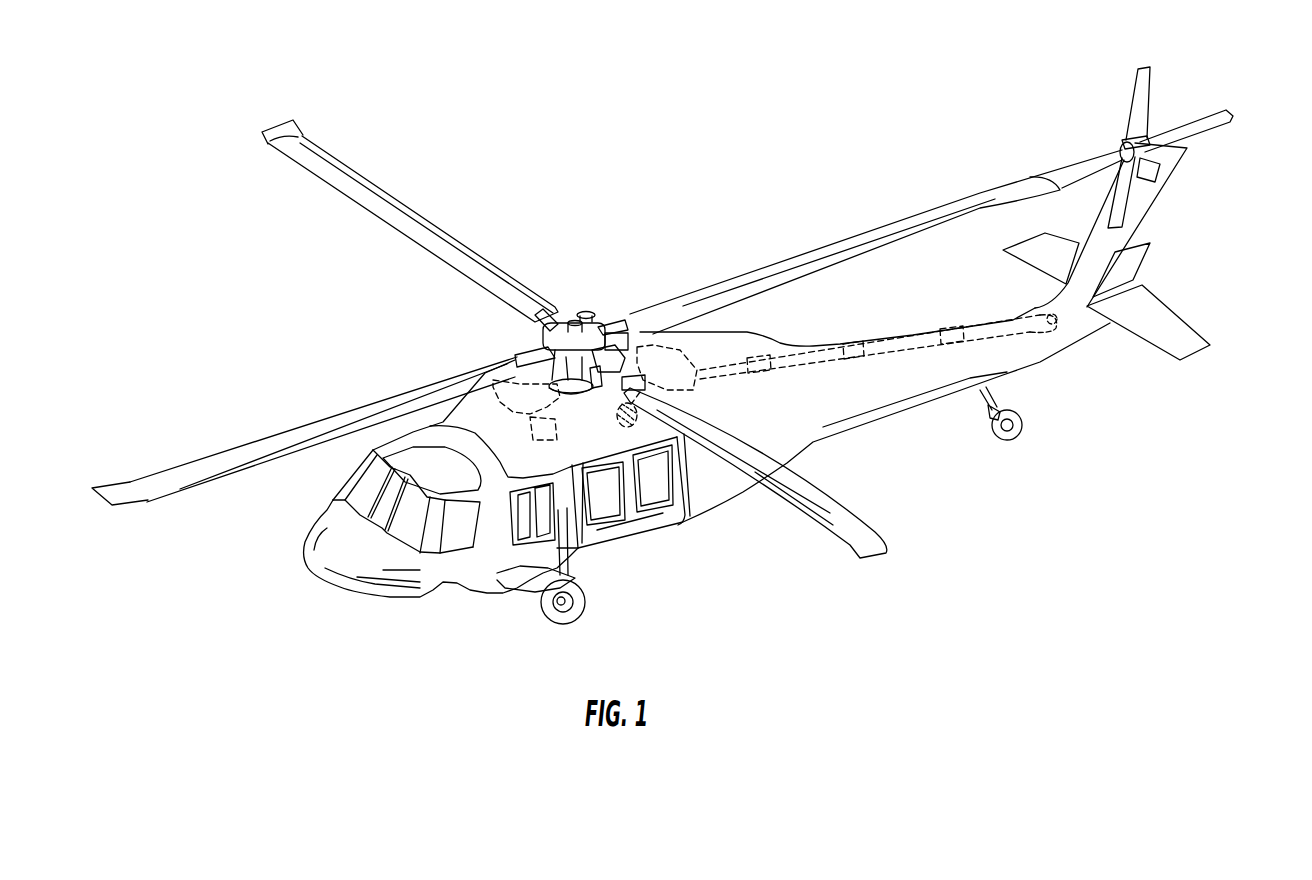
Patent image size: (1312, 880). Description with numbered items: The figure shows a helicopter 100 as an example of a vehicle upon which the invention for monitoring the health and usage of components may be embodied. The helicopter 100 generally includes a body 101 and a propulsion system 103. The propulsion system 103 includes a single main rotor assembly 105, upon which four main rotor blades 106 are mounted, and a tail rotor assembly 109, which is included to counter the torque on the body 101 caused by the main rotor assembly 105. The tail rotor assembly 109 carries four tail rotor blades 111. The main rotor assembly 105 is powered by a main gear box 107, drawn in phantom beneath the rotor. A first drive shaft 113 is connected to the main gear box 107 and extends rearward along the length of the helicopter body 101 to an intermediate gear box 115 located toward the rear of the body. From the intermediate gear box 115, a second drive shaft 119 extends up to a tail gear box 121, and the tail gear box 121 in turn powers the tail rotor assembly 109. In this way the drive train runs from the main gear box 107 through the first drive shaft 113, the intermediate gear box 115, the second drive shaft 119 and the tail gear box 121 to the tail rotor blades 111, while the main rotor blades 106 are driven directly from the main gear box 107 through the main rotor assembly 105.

The helicopter 100 is at (307, 294).
The body 101 is at (633, 570).
The propulsion system 103 is at (853, 207).
The main rotor assembly 105 is at (580, 296).
The main rotor blades 106 is at (425, 202).
The main gear box 107 is at (570, 417).
The tail rotor assembly 109 is at (1108, 138).
The tail rotor blades 111 is at (1153, 95).
The first drive shaft 113 is at (855, 343).
The intermediate gear box 115 is at (1030, 309).
The second drive shaft 119 is at (1075, 220).
The tail gear box 121 is at (1175, 190).